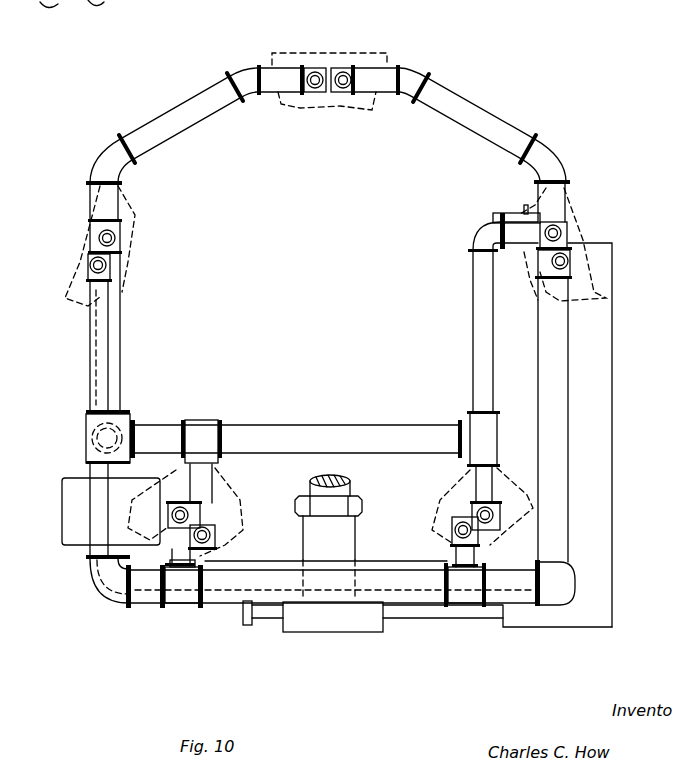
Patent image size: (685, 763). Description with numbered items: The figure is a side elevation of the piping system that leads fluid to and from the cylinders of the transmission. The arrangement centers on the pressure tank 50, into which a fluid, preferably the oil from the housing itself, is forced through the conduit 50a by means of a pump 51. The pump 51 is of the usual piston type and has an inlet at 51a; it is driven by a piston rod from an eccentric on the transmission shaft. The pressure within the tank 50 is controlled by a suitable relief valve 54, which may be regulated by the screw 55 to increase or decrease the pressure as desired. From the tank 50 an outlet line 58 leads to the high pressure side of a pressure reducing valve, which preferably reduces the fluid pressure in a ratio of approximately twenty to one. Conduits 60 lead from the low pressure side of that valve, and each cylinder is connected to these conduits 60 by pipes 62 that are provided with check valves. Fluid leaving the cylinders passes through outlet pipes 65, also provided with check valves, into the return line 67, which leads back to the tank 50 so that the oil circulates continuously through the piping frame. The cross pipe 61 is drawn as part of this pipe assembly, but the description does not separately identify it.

The pressure tank 50 is at (605, 412).
The conduit 50a is at (440, 612).
The pump 51 is at (356, 538).
The inlet 51a is at (272, 633).
The relief valve 54 is at (577, 214).
The screw 55 is at (622, 16).
The outlet line 58 is at (280, 561).
The conduits 60 is at (201, 112).
The cross pipe 61 is at (300, 426).
The pipes 62 is at (314, 70).
The outlet pipes 65 is at (343, 70).
The return line 67 is at (470, 122).